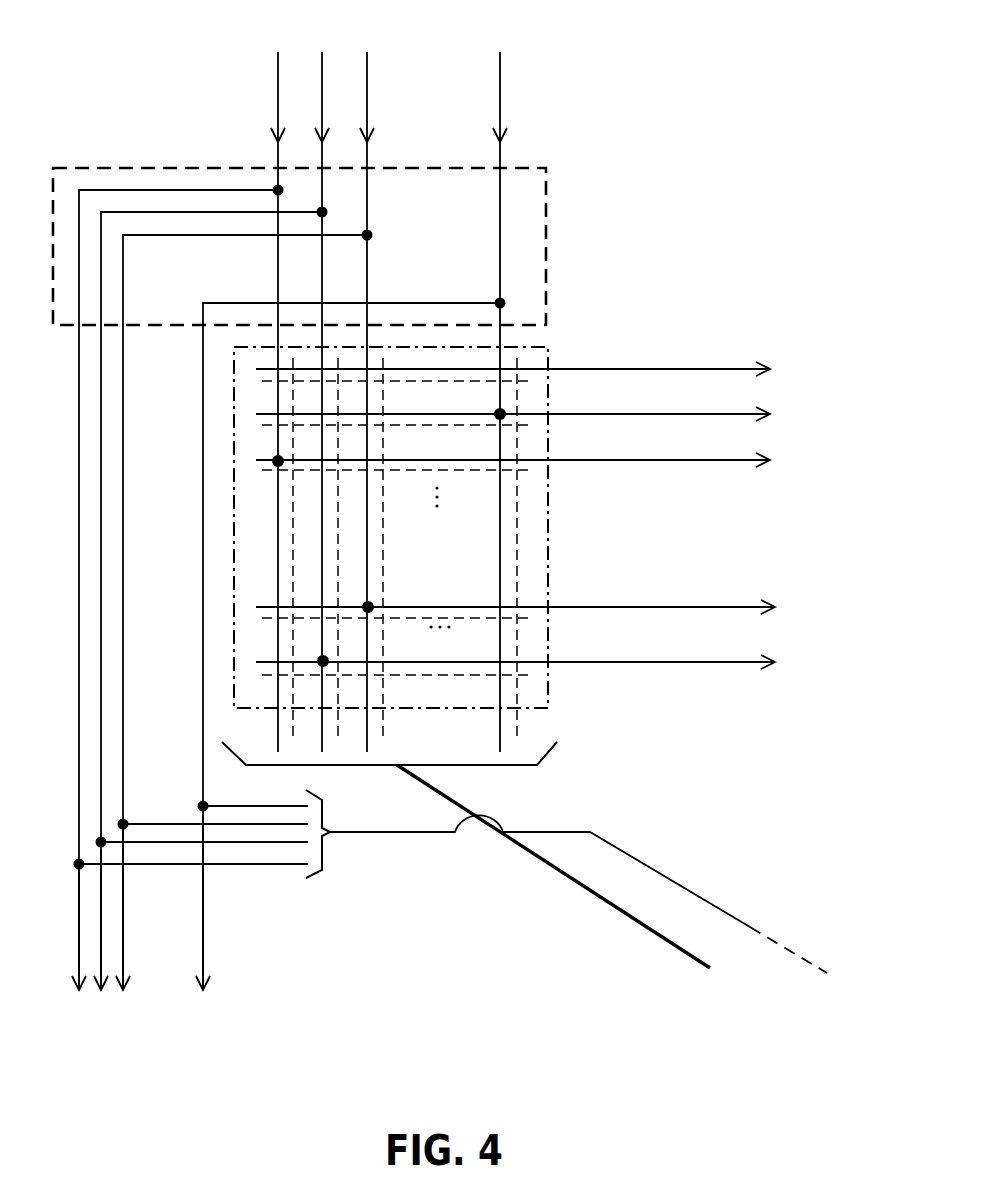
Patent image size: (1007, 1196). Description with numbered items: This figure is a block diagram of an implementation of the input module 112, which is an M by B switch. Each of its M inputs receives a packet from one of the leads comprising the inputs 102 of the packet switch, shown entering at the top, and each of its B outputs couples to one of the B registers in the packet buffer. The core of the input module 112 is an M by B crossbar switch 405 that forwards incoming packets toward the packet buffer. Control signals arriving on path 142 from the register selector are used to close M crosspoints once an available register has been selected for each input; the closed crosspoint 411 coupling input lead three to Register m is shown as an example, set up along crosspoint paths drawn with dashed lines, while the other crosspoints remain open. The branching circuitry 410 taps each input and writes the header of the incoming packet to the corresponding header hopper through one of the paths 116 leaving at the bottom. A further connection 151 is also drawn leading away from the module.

The inputs 102 is at (408, 45).
The input module 112 is at (684, 188).
The branching circuitry 410 is at (188, 168).
The closed crosspoint 411 is at (370, 600).
The M×B crossbar switch 405 is at (548, 710).
The paths 116 is at (242, 998).
The connection wire 151 is at (705, 898).
The path 142 is at (632, 918).